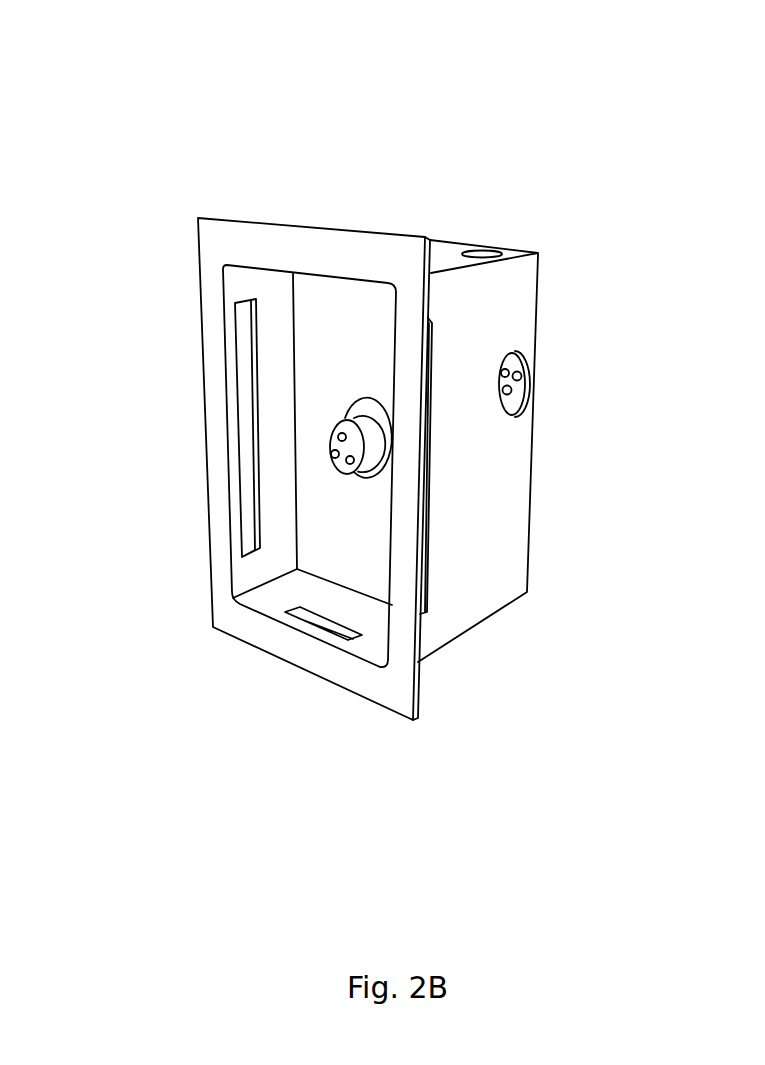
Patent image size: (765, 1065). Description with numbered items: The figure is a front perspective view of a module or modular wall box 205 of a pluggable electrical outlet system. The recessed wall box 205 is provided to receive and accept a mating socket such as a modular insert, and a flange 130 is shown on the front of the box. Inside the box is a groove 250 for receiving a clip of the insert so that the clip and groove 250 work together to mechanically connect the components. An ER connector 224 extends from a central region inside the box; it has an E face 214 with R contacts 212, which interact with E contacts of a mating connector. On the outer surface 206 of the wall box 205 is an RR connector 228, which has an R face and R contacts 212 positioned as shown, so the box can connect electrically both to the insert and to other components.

The modular wall box 205 is at (418, 133).
The flange 130 is at (383, 247).
The outer surface 206 is at (530, 280).
The R contact 212 is at (331, 456).
The E face 214 is at (332, 443).
The ER connector 224 is at (373, 445).
The RR connector 228 is at (512, 403).
The groove 250 is at (302, 619).